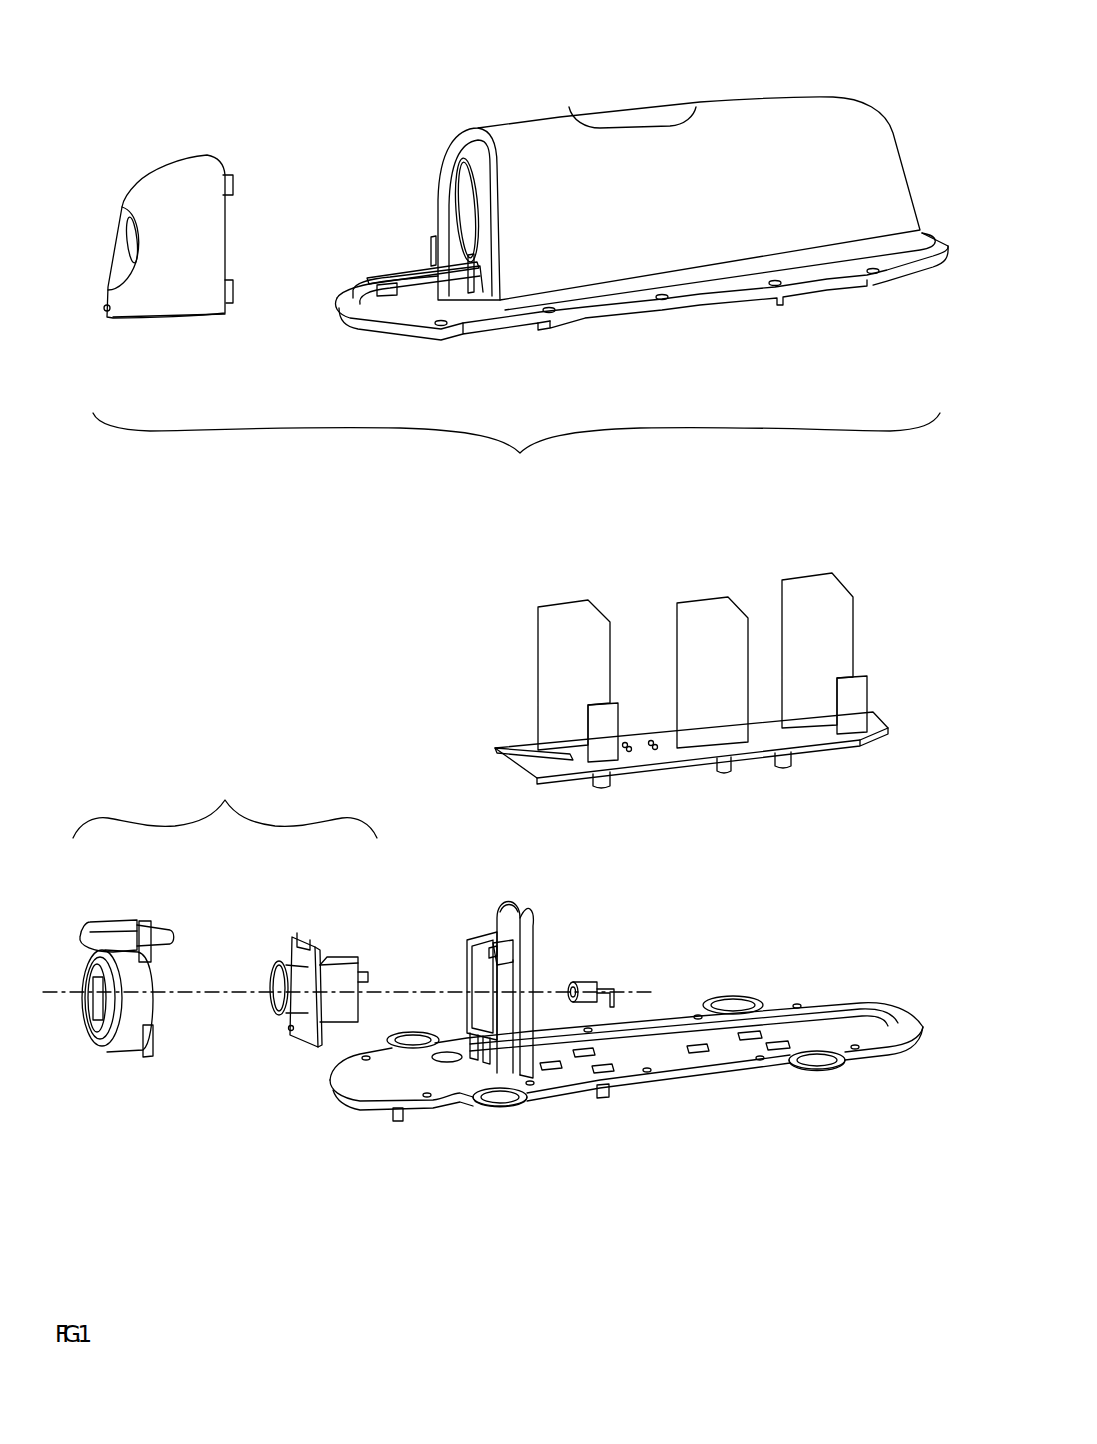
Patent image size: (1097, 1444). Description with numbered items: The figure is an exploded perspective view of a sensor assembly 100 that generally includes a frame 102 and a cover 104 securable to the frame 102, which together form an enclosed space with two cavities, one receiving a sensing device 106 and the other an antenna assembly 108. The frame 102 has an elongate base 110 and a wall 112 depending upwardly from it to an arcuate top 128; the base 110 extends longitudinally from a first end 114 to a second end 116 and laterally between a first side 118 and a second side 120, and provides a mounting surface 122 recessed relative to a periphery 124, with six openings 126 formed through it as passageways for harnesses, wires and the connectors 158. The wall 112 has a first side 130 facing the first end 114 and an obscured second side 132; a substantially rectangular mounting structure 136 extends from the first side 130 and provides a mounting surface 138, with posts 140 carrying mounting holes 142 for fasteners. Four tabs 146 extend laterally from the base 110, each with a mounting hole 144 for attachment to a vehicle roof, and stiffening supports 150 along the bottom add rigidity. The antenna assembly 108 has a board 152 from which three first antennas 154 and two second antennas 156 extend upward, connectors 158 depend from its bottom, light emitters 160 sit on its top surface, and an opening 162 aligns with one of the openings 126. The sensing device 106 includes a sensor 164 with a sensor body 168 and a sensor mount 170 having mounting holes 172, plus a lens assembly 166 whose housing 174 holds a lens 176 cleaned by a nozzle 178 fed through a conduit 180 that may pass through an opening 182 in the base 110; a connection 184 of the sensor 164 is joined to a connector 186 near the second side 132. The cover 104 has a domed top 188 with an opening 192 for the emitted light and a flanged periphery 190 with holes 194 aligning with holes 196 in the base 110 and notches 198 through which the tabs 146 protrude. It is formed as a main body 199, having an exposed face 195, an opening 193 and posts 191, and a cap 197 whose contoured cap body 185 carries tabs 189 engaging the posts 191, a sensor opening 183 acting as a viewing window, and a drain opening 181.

The sensor assembly 100 is at (793, 82).
The frame 102 is at (328, 1183).
The cover 104 is at (516, 452).
The sensing device 106 is at (225, 801).
The antenna assembly 108 is at (530, 580).
The base 110 is at (778, 977).
The wall 112 is at (522, 948).
The first end 114 is at (330, 1087).
The second end 116 is at (920, 1017).
The first side 118 is at (697, 1073).
The second side 120 is at (677, 1013).
The mounting surface 122 is at (628, 1053).
The periphery 124 is at (870, 1045).
The openings 126 is at (757, 1033).
The top 128 is at (502, 902).
The first side 130 is at (502, 910).
The second side 132 is at (520, 927).
The mounting structure 136 is at (477, 977).
The mounting surface 138 is at (467, 1030).
The posts 140 is at (500, 950).
The mounting holes 142 is at (493, 952).
The mounting holes 144 is at (502, 1098).
The tabs 146 is at (522, 1108).
The stiffening supports 150 is at (387, 1107).
The board 152 is at (540, 767).
The first antennas 154 is at (553, 668).
The second antennas 156 is at (597, 743).
The connectors 158 is at (723, 773).
The light emitters 160 is at (632, 748).
The opening 162 is at (540, 763).
The sensor 164 is at (285, 1053).
The lens assembly 166 is at (143, 1068).
The sensor body 168 is at (337, 960).
The sensor mount 170 is at (307, 953).
The mounting holes 172 is at (290, 1026).
The housing 174 is at (148, 988).
The lens 176 is at (103, 992).
The nozzle 178 is at (98, 950).
The conduit 180 is at (163, 928).
The drain opening 181 is at (108, 312).
The opening 182 is at (448, 1058).
The sensor opening 183 is at (131, 258).
The connection 184 is at (365, 970).
The cap body 185 is at (192, 273).
The connector 186 is at (598, 982).
The domed top 188 is at (528, 150).
The tabs 189 is at (233, 283).
The flanged periphery 190 is at (585, 304).
The posts 191 is at (470, 270).
The opening 192 is at (639, 120).
The opening 193 is at (455, 200).
The holes 194 is at (665, 299).
The exposed face 195 is at (463, 155).
The holes 196 is at (757, 1059).
The cap 197 is at (150, 143).
The notches 198 is at (542, 320).
The main body 199 is at (874, 315).